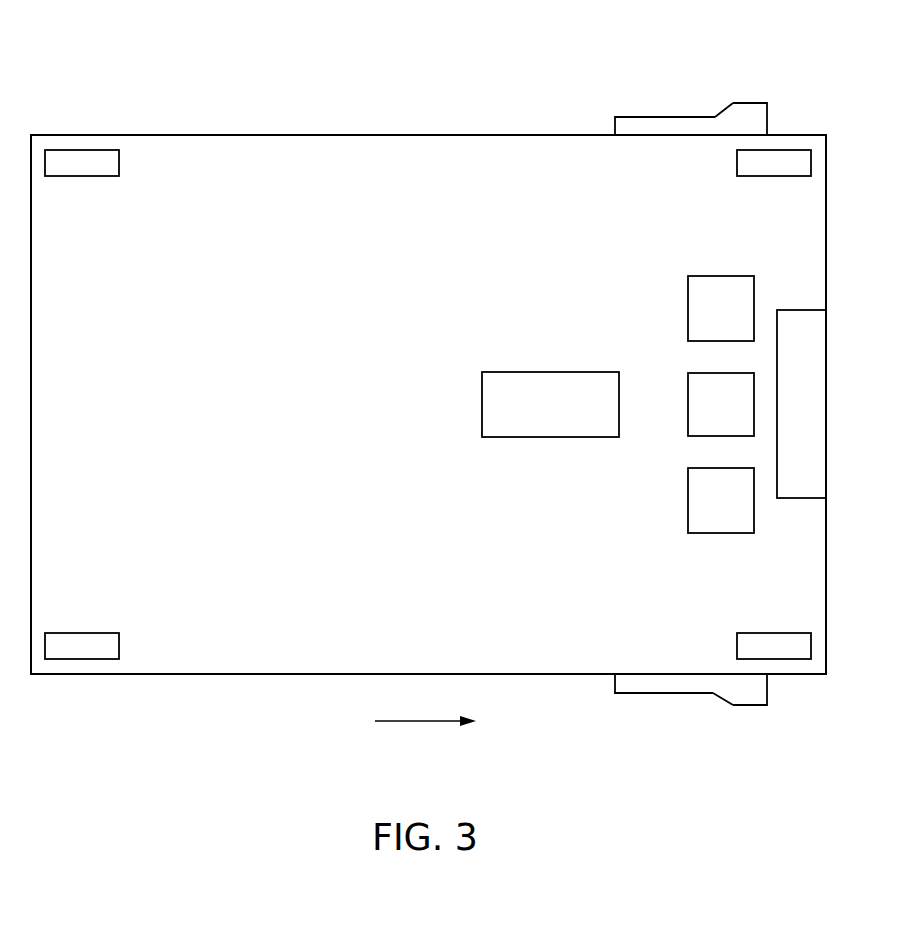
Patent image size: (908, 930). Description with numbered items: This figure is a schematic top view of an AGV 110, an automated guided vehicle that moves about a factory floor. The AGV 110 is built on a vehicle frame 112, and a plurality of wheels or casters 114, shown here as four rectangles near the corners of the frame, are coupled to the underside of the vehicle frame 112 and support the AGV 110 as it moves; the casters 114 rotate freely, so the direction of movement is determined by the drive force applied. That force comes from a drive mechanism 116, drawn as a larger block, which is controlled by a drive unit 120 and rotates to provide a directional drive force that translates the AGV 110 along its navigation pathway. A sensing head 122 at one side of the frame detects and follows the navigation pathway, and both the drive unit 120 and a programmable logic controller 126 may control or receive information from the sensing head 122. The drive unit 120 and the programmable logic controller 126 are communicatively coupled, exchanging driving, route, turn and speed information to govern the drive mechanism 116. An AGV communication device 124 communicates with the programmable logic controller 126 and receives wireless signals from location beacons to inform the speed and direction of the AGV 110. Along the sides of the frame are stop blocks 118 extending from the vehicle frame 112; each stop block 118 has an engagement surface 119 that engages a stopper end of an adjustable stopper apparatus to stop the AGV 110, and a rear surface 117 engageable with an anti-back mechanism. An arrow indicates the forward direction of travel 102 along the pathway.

The AGV 110 is at (457, 381).
The vehicle frame 112 is at (202, 135).
The casters 114 is at (75, 170).
The drive mechanism 116 is at (559, 381).
The rear surface 117 is at (615, 117).
The stop block 118 is at (727, 122).
The engagement surface 119 is at (767, 117).
The drive unit 120 is at (703, 413).
The sensing head 122 is at (810, 405).
The AGV communication device 124 is at (703, 318).
The programmable logic controller 126 is at (703, 510).
The forward direction of travel 102 is at (420, 722).